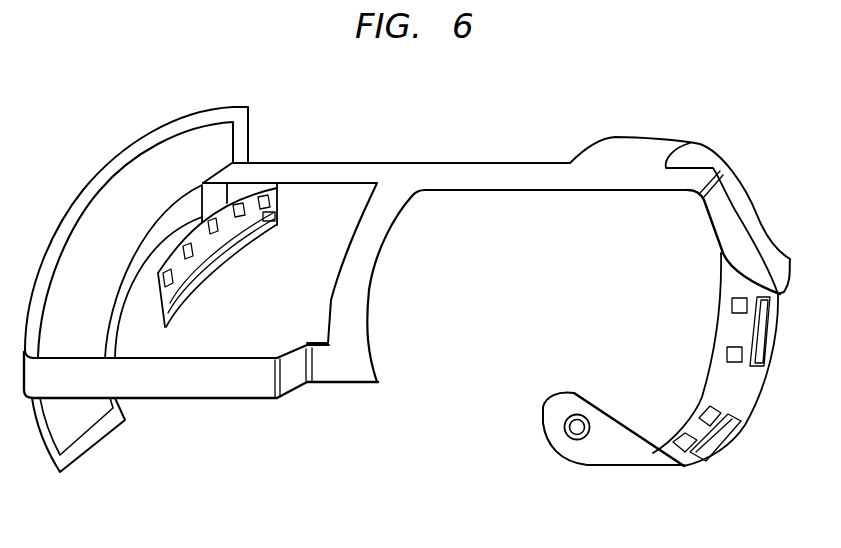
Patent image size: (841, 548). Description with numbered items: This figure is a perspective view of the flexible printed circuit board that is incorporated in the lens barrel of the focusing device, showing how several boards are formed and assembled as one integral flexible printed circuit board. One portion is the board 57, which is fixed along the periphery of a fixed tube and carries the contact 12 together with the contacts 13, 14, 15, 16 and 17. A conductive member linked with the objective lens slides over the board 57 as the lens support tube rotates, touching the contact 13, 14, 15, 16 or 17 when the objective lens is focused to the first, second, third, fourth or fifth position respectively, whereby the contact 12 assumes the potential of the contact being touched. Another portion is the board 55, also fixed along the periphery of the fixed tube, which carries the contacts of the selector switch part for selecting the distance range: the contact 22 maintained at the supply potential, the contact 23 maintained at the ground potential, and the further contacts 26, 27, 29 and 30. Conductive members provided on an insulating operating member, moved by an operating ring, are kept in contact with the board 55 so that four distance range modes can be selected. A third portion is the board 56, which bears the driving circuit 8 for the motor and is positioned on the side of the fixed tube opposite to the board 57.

The driving circuit 8 is at (178, 144).
The board 56 is at (98, 182).
The board 57 is at (275, 186).
The contact 12 is at (222, 243).
The contact 13 is at (173, 298).
The contact 14 is at (186, 276).
The contact 15 is at (199, 262).
The contact 16 is at (246, 226).
The contact 17 is at (266, 220).
The contact 22 is at (713, 447).
The contact 23 is at (762, 363).
The contact 26 is at (678, 438).
The contact 27 is at (701, 412).
The contact 29 is at (727, 353).
The contact 30 is at (731, 304).
The board 55 is at (751, 412).